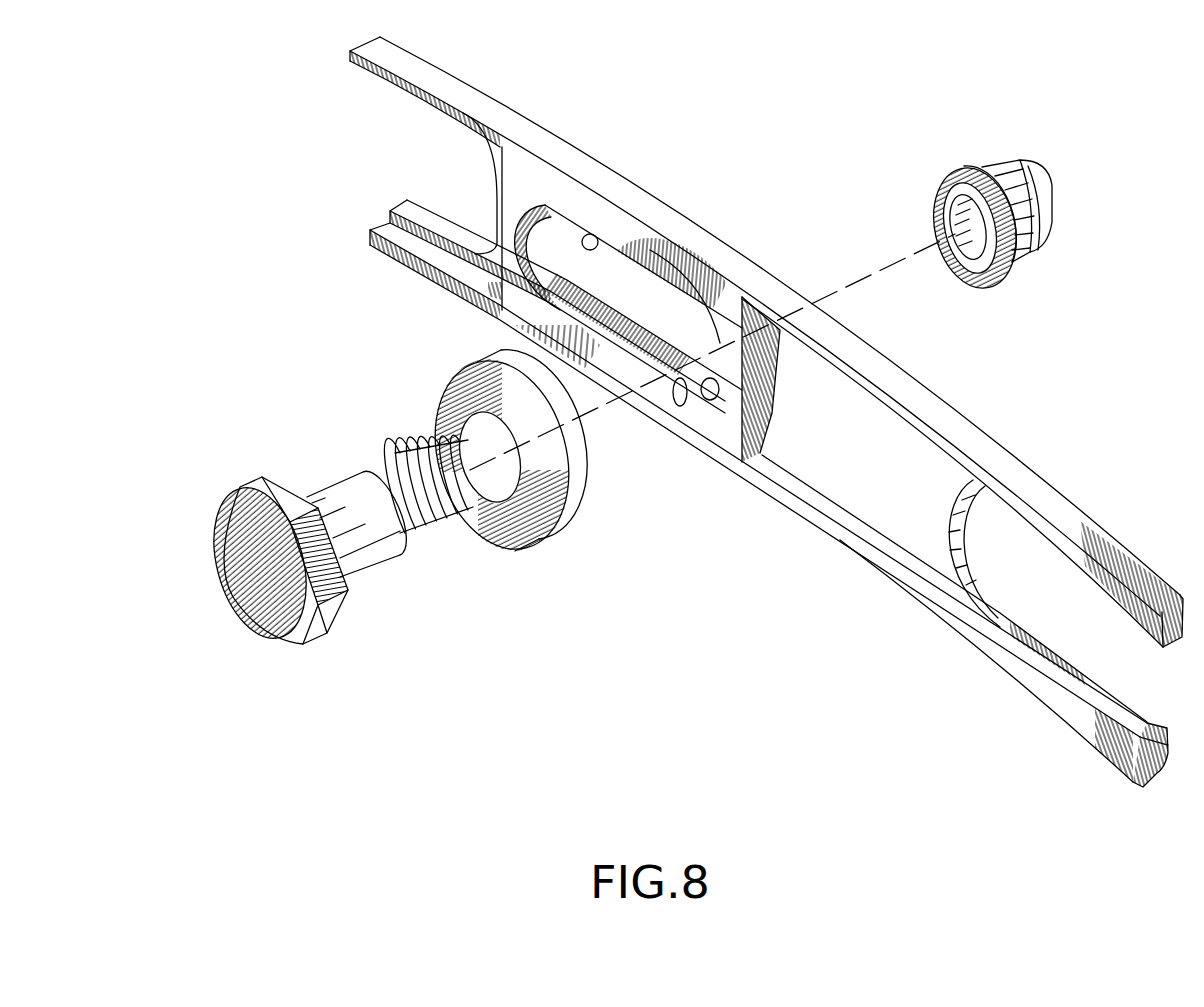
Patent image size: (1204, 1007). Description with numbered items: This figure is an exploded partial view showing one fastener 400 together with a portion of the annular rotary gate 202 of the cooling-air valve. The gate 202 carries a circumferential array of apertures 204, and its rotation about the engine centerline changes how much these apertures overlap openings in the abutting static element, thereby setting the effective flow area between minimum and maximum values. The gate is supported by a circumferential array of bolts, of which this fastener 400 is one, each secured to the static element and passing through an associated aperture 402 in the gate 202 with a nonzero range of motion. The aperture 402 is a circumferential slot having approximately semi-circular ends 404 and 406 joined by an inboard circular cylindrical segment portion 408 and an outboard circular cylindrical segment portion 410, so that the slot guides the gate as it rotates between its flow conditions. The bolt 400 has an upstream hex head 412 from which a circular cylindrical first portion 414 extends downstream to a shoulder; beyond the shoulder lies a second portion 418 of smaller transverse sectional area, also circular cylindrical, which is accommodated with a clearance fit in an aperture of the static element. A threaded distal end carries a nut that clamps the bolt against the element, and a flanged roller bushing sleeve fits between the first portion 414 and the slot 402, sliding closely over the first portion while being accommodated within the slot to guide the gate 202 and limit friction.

The annular rotary gate 202 is at (766, 379).
The apertures 204 is at (1067, 602).
The fastener 400 is at (358, 551).
The aperture 402 is at (646, 313).
The semi-circular end 404 is at (505, 302).
The semi-circular end 406 is at (708, 400).
The inboard circular cylindrical segment portion 408 is at (674, 408).
The outboard circular cylindrical segment portion 410 is at (585, 231).
The head 412 is at (237, 535).
The first portion 414 is at (367, 555).
The second portion 418 is at (381, 474).